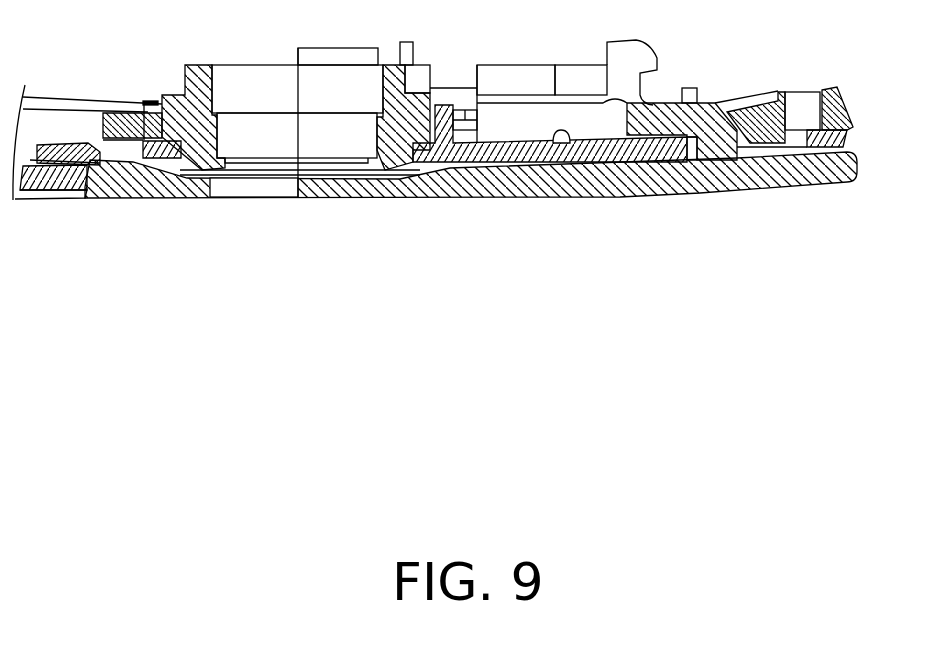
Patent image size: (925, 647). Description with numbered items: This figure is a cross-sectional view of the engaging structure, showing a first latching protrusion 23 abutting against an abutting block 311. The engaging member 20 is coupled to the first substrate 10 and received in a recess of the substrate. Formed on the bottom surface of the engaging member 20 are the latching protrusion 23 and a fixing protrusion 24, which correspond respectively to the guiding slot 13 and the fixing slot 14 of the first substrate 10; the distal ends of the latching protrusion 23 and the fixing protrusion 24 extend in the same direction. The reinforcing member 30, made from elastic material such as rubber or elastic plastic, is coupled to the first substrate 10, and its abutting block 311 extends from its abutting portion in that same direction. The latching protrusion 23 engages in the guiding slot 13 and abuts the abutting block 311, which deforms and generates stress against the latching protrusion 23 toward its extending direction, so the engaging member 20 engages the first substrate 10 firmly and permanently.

The first substrate 10 is at (43, 182).
The guiding slot 13 is at (692, 153).
The fixing slot 14 is at (78, 190).
The engaging member 20 is at (208, 163).
The first latching protrusion 23 is at (658, 105).
The fixing protrusion 24 is at (67, 147).
The reinforcing member 30 is at (837, 107).
The abutting block 311 is at (770, 137).